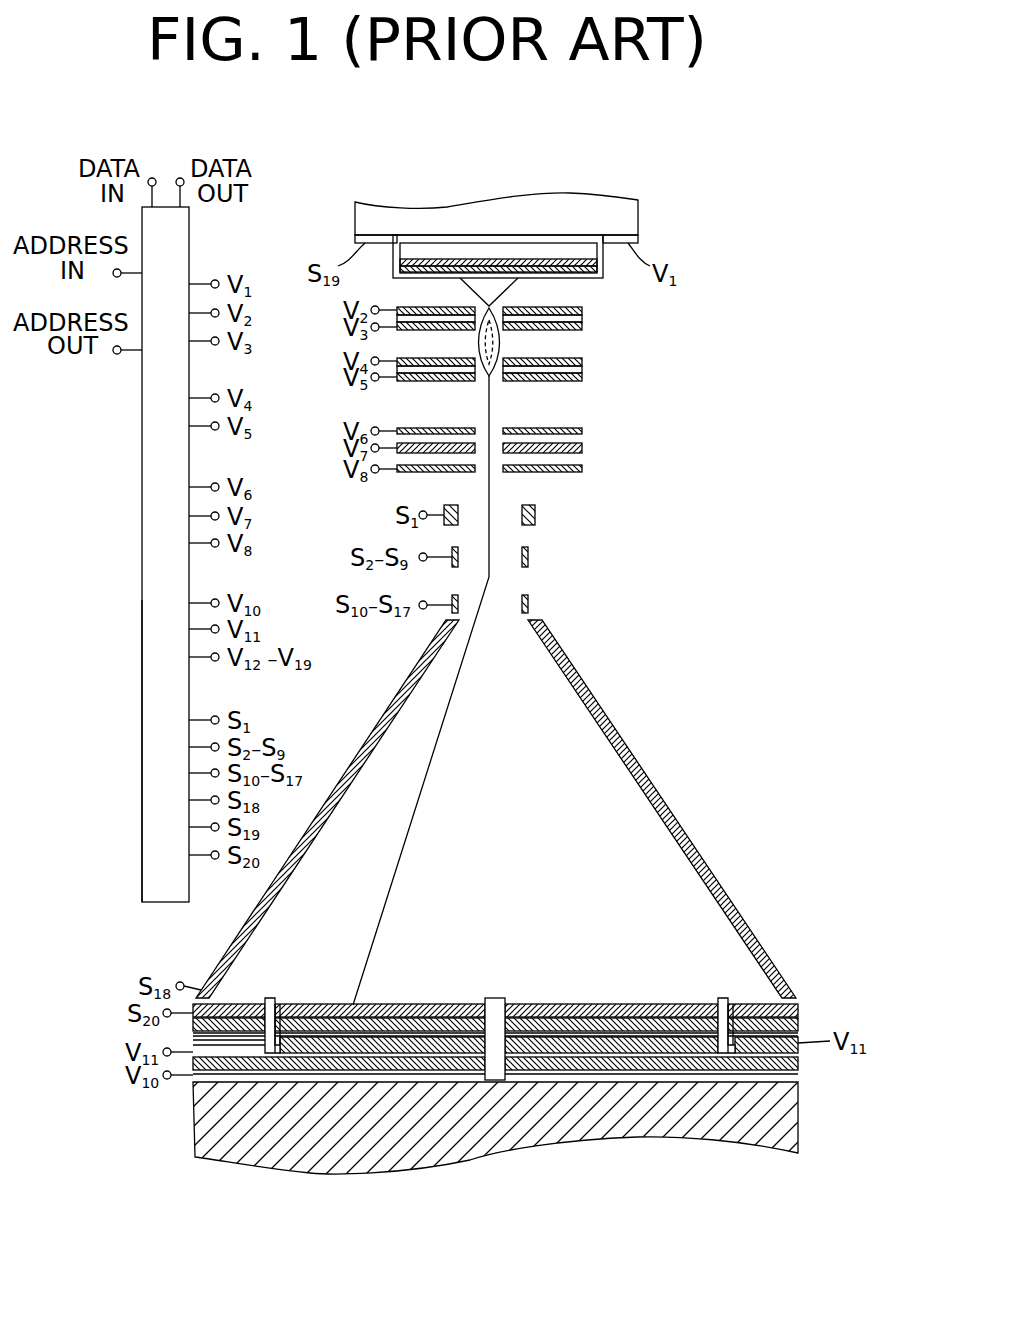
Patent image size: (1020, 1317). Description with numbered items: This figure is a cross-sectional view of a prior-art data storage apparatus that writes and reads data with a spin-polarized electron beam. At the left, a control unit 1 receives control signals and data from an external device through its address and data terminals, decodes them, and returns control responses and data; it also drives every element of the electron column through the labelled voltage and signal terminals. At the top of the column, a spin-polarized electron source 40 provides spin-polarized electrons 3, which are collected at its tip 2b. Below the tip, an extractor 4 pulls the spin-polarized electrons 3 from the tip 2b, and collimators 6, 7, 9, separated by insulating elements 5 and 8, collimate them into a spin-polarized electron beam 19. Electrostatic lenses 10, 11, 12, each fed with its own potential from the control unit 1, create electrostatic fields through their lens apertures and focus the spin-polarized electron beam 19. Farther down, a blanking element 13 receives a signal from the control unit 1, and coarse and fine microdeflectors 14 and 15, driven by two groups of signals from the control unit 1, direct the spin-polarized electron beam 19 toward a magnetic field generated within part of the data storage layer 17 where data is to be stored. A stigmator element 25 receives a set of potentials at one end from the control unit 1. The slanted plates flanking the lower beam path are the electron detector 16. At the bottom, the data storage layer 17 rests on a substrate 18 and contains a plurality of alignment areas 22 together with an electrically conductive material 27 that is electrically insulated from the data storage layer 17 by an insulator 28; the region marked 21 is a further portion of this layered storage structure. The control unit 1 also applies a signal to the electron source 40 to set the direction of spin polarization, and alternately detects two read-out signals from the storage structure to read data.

The control unit 1 is at (189, 229).
The tip 2b is at (510, 290).
The spin-polarized electrons 3 is at (479, 302).
The extractor 4 is at (582, 309).
The insulating element 5 is at (582, 324).
The collimator 6 is at (582, 329).
The collimator 7 is at (582, 360).
The insulating element 8 is at (582, 375).
The collimator 9 is at (582, 380).
The electrostatic lens 10 is at (582, 431).
The electrostatic lens 11 is at (582, 448).
The electrostatic lens 12 is at (582, 469).
The blanking element 13 is at (535, 515).
The coarse microdeflector 14 is at (528, 557).
The fine microdeflector 15 is at (528, 604).
The electron detector 16 is at (615, 732).
The data storage layer 17 is at (432, 1004).
The substrate 18 is at (798, 1115).
The spin-polarized electron beam 19 is at (437, 745).
The pixel electrode structure 21 is at (475, 955).
The alignment area 22 is at (284, 955).
The stigmator element 25 is at (142, 889).
The electrically conductive material 27 is at (271, 997).
The insulator 28 is at (283, 1004).
The spin-polarized electron source 40 is at (440, 203).